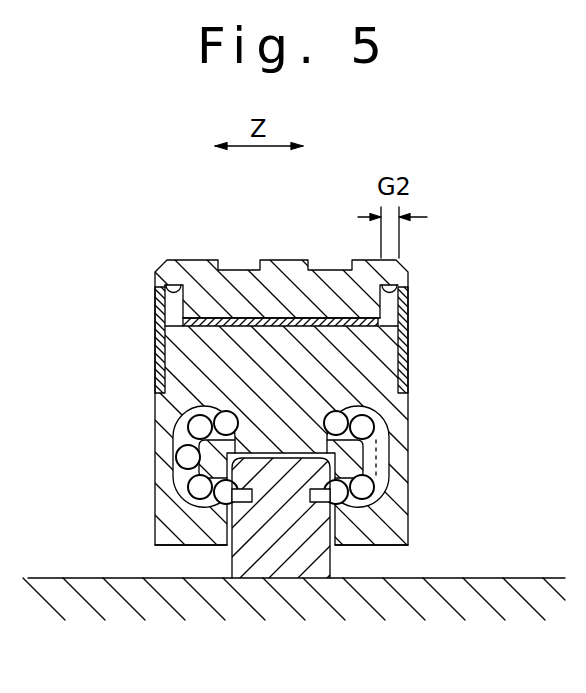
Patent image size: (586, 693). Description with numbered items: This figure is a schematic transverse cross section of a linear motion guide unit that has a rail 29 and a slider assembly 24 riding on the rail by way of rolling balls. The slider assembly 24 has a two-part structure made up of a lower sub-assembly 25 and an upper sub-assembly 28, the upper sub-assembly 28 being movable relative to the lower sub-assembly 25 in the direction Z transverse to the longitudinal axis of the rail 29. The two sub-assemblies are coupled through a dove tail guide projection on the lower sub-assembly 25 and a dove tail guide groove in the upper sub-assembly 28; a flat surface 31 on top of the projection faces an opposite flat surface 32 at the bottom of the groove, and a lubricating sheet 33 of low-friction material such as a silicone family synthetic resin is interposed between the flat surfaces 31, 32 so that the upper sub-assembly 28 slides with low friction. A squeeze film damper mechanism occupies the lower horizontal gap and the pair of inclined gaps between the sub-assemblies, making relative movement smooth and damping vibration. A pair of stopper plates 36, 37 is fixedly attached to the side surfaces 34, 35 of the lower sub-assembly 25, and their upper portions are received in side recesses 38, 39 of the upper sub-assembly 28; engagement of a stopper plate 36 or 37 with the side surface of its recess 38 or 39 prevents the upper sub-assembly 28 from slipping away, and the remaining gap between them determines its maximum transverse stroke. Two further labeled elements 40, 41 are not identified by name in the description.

The slider assembly 24 is at (293, 379).
The lower sub-assembly 25 is at (396, 418).
The upper sub-assembly 28 is at (281, 270).
The rail 29 is at (300, 560).
The flat surface 31 is at (184, 312).
The opposite flat surface 32 is at (229, 322).
The lubricating sheet 33 is at (321, 322).
The side surface 34 is at (408, 523).
The side surface 35 is at (155, 523).
The stopper plate 36 is at (410, 364).
The stopper plate 37 is at (155, 369).
The side recess 38 is at (402, 291).
The side recess 39 is at (158, 292).
The right gap 40 is at (383, 310).
The left gap 41 is at (165, 306).